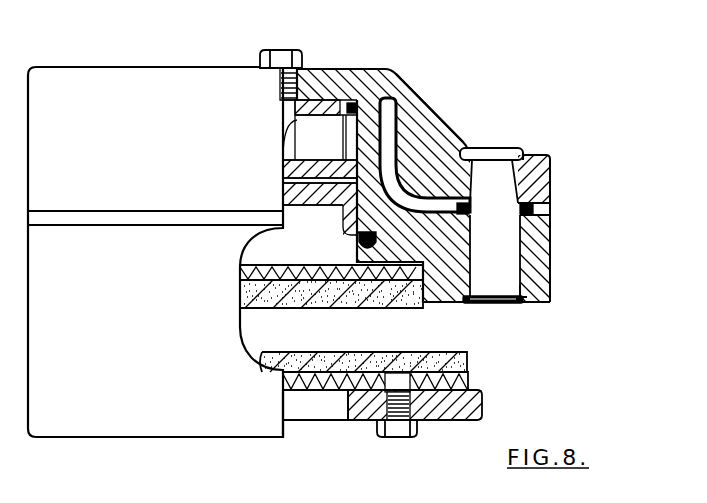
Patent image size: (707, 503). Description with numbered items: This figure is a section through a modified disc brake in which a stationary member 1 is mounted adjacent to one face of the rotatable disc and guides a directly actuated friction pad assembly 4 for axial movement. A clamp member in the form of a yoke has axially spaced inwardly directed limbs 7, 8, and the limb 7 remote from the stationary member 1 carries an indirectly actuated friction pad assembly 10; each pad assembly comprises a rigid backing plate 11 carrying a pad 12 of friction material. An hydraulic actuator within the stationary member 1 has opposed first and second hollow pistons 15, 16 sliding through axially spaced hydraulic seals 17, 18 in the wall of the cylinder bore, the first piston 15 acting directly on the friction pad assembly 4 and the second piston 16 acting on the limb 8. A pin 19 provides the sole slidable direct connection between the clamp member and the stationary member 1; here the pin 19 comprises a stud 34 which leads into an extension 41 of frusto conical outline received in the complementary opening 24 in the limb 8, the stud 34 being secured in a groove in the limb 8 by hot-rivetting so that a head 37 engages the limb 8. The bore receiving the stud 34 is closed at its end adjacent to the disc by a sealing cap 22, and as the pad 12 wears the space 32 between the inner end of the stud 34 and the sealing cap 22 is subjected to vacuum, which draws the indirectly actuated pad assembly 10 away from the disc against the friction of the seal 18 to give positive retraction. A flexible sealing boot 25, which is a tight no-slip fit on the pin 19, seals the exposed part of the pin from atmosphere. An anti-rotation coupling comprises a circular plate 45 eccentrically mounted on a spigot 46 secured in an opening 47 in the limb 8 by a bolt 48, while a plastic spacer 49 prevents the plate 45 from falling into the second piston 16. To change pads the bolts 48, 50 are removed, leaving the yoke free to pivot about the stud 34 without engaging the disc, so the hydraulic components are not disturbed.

The stationary member 1 is at (539, 243).
The directly actuated friction pad assembly 4 is at (331, 308).
The limb 7 is at (445, 410).
The limb 8 is at (377, 83).
The indirectly actuated friction pad assembly 10 is at (433, 367).
The rigid backing plate 11 is at (483, 391).
The pad 12 is at (302, 308).
The first hollow piston 15 is at (348, 207).
The second hollow piston 16 is at (295, 170).
The hydraulic seal 17 is at (360, 239).
The hydraulic seal 18 is at (417, 123).
The pin 19 is at (504, 236).
The sealing cap 22 is at (504, 304).
The opening 24 is at (540, 157).
The flexible sealing boot 25 is at (529, 207).
The space 32 is at (523, 293).
The stud 34 is at (503, 263).
The head 37 is at (497, 152).
The extension 41 is at (502, 183).
The circular plate 45 is at (324, 106).
The spigot 46 is at (313, 98).
The opening 47 is at (306, 72).
The bolt 48 is at (280, 50).
The plastic spacer 49 is at (391, 112).
The bolt 50 is at (398, 427).